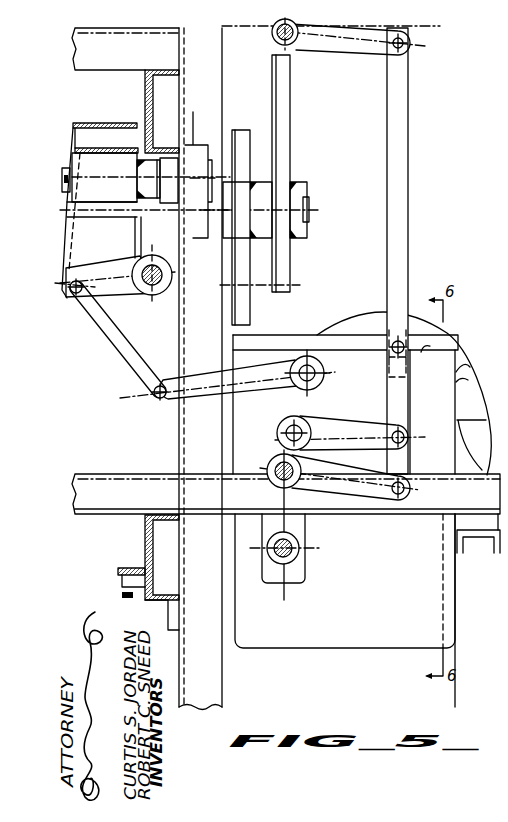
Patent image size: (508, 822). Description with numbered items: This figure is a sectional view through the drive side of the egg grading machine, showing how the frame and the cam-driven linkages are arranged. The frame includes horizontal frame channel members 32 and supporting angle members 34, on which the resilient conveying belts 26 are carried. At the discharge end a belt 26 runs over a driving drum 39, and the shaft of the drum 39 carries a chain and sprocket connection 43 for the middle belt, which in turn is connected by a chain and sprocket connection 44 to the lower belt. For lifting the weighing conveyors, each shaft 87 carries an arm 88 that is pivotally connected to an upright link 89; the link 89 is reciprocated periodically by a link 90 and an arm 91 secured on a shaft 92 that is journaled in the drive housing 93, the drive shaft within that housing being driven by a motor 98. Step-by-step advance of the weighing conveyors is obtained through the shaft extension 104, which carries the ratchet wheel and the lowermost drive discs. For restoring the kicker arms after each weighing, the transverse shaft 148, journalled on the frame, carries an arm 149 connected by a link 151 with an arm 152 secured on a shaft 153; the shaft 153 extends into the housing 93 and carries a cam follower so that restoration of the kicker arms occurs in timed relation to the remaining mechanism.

The conveying belt 26 is at (100, 123).
The horizontal frame channel member 32 is at (145, 87).
The angle member 34 is at (85, 62).
The driving drum 39 is at (143, 235).
The chain and sprocket connection 43 is at (290, 117).
The chain and sprocket connection 44 is at (250, 313).
The shaft 87 is at (273, 35).
The arm 88 is at (337, 43).
The upright link 89 is at (403, 123).
The link 90 is at (405, 408).
The arm 91 is at (342, 422).
The shaft 92 is at (288, 427).
The drive housing 93 is at (320, 650).
The motor 98 is at (478, 382).
The shaft extension 104 is at (298, 556).
The transverse shaft 148 is at (160, 297).
The arm 149 is at (115, 268).
The link 151 is at (117, 347).
The arm 152 is at (212, 373).
The shaft 153 is at (323, 372).